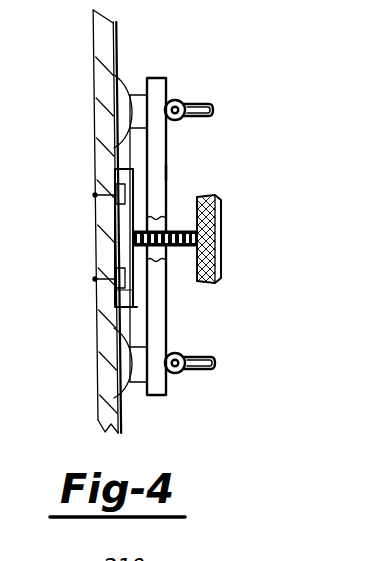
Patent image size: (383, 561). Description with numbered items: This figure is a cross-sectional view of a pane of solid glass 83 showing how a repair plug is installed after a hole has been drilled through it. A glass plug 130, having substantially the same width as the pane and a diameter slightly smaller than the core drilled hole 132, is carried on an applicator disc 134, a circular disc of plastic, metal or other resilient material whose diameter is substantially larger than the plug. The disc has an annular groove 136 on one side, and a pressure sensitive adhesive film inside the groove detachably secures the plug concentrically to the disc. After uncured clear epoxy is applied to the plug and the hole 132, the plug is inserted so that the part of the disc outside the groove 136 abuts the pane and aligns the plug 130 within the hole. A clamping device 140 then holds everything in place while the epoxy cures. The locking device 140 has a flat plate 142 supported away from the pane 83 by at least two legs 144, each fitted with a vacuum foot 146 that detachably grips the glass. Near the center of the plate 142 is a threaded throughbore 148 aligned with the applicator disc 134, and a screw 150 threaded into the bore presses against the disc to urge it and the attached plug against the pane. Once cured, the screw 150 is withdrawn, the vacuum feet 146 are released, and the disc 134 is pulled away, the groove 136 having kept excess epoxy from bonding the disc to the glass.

The pane of glass 83 is at (93, 40).
The glass plug 130 is at (97, 236).
The core drilled hole 132 is at (97, 270).
The applicator disc 134 is at (115, 212).
The annular groove 136 is at (118, 272).
The clamping device 140 is at (207, 156).
The flat plate 142 is at (168, 172).
The leg 144 is at (143, 86).
The vacuum foot 146 is at (116, 75).
The threaded throughbore 148 is at (172, 223).
The screw 150 is at (222, 266).